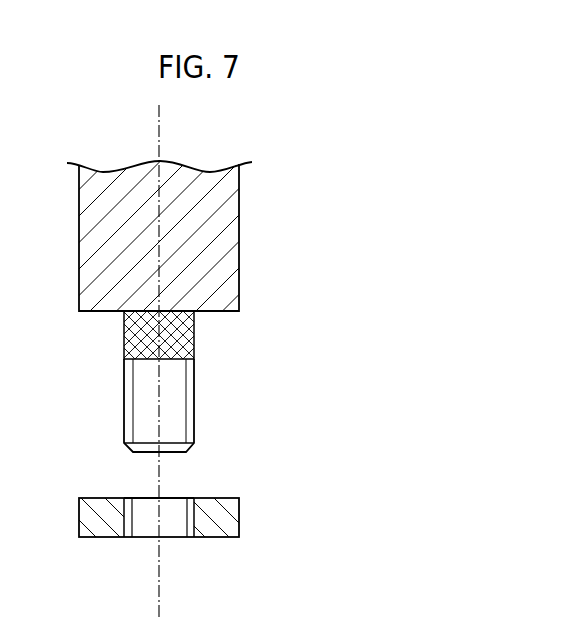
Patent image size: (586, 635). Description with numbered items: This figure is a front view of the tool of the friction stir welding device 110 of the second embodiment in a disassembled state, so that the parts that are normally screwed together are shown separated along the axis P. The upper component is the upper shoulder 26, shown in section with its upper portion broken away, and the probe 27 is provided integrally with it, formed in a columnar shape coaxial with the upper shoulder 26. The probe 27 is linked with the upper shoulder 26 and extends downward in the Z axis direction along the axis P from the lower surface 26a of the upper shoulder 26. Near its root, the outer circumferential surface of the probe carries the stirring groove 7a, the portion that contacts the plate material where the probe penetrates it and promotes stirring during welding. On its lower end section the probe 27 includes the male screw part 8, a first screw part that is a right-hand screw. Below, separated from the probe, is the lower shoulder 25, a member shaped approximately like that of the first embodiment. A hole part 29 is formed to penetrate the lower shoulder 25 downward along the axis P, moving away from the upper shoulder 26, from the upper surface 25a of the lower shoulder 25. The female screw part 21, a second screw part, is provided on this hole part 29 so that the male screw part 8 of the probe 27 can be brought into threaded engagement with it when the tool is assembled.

The friction stir welding device 110 is at (363, 188).
The upper shoulder 26 is at (218, 247).
The lower surface of the upper shoulder 26a is at (216, 312).
The stirring groove 7a is at (123, 342).
The probe 27 is at (187, 391).
The male screw part 8 is at (195, 422).
The upper surface of the lower shoulder 25a is at (218, 498).
The lower shoulder 25 is at (223, 522).
The hole part 29 is at (129, 512).
The female screw part 21 is at (187, 523).
The axis P is at (157, 598).